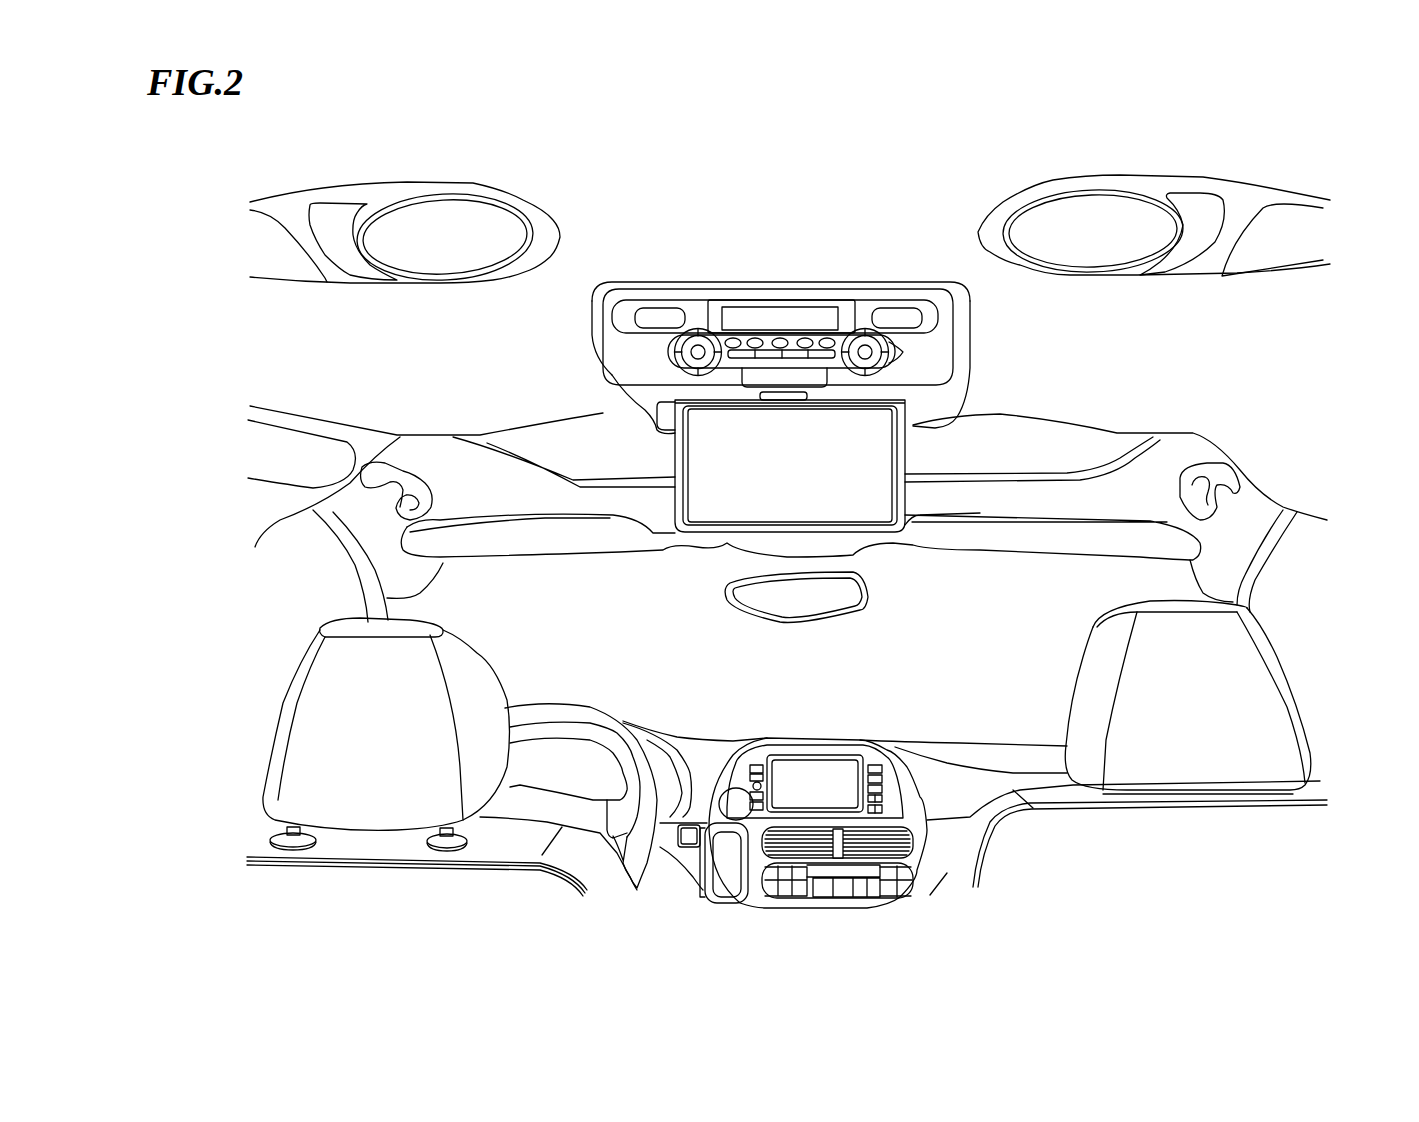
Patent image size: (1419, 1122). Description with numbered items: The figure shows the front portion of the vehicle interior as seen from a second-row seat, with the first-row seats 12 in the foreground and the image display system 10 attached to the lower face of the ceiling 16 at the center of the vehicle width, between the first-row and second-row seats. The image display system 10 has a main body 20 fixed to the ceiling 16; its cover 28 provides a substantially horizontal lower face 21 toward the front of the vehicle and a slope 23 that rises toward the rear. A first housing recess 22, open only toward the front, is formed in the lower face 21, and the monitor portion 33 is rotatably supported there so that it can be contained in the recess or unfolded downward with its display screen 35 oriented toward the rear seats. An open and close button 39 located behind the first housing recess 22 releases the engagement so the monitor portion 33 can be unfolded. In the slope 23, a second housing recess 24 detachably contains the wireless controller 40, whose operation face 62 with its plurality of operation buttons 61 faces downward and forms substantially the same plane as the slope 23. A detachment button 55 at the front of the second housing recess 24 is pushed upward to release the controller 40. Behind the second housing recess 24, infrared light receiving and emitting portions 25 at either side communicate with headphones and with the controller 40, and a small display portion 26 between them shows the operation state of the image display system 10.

The image display system 10 is at (658, 458).
The first-row seats 12 is at (307, 733).
The ceiling 16 is at (297, 332).
The main body 20 is at (796, 292).
The lower face 21 is at (633, 400).
The first housing recess 22 is at (663, 433).
The slope 23 is at (600, 340).
The second housing recess 24 is at (860, 343).
The infrared light receiving and emitting portions 25 is at (655, 320).
The small display portion 26 is at (780, 318).
The cover 28 is at (960, 373).
The monitor portion 33 is at (857, 500).
The display screen 35 is at (723, 510).
The open and close button 39 is at (790, 402).
The controller 40 is at (813, 256).
The detachment button 55 is at (760, 375).
The operation buttons 61 is at (733, 340).
The operation face 62 is at (915, 368).